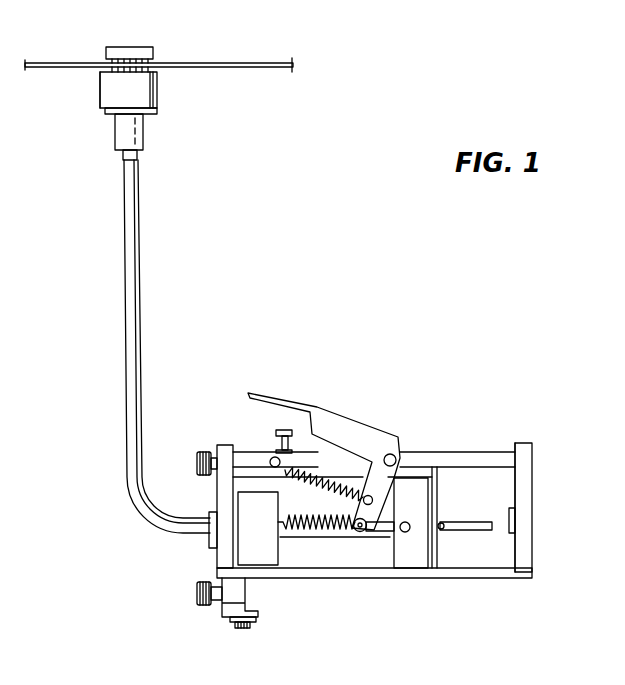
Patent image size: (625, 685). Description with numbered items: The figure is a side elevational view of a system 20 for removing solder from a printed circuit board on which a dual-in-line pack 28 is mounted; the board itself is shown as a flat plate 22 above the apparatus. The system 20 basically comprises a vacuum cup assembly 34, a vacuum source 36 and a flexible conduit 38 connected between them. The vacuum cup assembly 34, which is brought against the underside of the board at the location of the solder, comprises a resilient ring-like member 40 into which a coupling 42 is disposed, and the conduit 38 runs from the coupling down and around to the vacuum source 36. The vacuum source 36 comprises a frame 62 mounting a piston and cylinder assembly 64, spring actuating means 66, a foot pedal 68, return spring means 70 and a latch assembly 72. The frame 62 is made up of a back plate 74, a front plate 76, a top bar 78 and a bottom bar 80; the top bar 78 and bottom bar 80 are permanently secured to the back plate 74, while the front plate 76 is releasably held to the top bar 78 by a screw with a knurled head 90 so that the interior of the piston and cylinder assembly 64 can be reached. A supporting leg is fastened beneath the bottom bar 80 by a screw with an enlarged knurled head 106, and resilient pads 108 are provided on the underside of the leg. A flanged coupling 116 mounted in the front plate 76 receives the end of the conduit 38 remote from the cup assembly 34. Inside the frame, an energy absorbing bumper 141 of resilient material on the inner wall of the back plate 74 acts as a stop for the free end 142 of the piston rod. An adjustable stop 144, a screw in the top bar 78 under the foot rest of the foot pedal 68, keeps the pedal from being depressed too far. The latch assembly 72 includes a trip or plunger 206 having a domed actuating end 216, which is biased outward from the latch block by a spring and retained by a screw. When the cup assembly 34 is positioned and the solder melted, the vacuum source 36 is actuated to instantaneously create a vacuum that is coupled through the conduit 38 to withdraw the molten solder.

The system 20 is at (286, 367).
The tone arm 22 is at (66, 78).
The dual-in-line pack 28 is at (128, 47).
The vacuum cup assembly 34 is at (141, 86).
The vacuum source 36 is at (420, 457).
The flexible conduit 38 is at (148, 356).
The resilient ring-like member 40 is at (110, 97).
The coupling 42 is at (138, 136).
The frame 62 is at (490, 459).
The piston and cylinder assembly 64 is at (275, 527).
The spring actuating means 66 is at (311, 543).
The foot pedal 68 is at (342, 428).
The return spring means 70 is at (328, 488).
The latch assembly 72 is at (423, 515).
The back plate 74 is at (523, 527).
The front plate 76 is at (218, 556).
The top bar 78 is at (479, 452).
The bottom bar 80 is at (472, 571).
The knurled head 90 is at (202, 455).
The enlarged knurled head 106 is at (196, 594).
The resilient pads 108 is at (246, 628).
The flanged coupling 116 is at (211, 518).
The energy absorbing bumper 141 is at (514, 508).
The free end 142 is at (498, 516).
The adjustable stop 144 is at (280, 441).
The trip or plunger 206 is at (383, 537).
The domed actuating end 216 is at (363, 533).